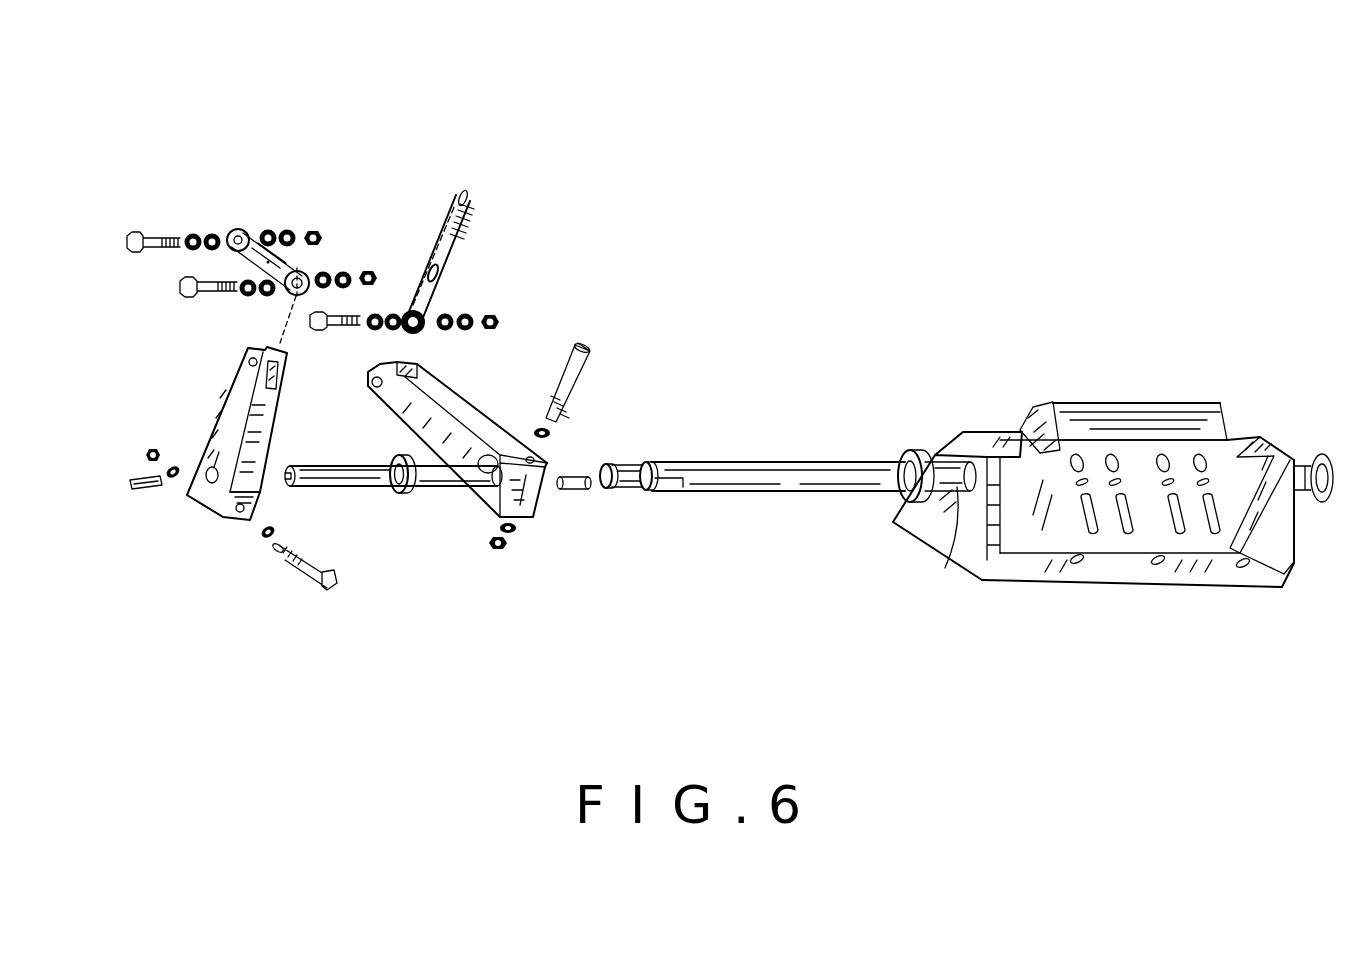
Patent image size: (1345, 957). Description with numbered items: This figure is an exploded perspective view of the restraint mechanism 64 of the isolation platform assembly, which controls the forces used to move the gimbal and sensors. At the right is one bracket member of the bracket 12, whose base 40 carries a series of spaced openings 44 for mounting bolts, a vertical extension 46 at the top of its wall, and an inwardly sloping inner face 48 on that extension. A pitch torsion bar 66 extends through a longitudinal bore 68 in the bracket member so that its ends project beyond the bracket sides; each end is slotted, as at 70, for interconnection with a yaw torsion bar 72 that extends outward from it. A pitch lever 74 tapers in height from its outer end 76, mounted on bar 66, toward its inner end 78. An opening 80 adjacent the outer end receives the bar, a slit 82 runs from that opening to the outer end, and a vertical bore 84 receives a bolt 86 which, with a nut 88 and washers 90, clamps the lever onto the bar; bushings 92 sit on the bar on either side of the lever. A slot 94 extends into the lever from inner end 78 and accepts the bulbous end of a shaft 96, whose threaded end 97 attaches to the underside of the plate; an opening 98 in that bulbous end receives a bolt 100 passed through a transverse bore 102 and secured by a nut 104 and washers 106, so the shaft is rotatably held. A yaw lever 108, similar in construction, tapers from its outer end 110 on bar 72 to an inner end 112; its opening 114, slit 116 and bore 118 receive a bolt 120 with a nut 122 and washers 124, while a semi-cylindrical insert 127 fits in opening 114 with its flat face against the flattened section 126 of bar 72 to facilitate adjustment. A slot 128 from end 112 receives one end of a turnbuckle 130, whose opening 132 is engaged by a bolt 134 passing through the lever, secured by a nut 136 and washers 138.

The bracket 12 is at (1147, 590).
The base 40 is at (1030, 585).
The openings 44 is at (1081, 566).
The vertical extension 46 is at (1228, 420).
The inner face 48 is at (1037, 407).
The restraint mechanism 64 is at (794, 322).
The pitch torsion bar 66 is at (827, 461).
The longitudinal bore 68 is at (952, 563).
The slot 70 is at (658, 488).
The yaw torsion bar 72 is at (380, 463).
The pitch lever 74 is at (478, 412).
The outer end 76 is at (492, 512).
The inner end 78 is at (374, 368).
The opening 80 is at (492, 456).
The slit 82 is at (531, 518).
The vertical bore 84 is at (533, 460).
The bolt 86 is at (578, 372).
The nut 88 is at (500, 548).
The washers 90 is at (553, 430).
The bushings 92 is at (912, 452).
The slot 94 is at (413, 376).
The shaft 96 is at (443, 232).
The threaded end 97 is at (453, 193).
The opening 98 is at (410, 310).
The bolt 100 is at (306, 320).
The transverse bore 102 is at (370, 386).
The nut 104 is at (497, 315).
The washers 106 is at (467, 312).
The yaw lever 108 is at (222, 408).
The outer end 110 is at (238, 520).
The inner end 112 is at (245, 347).
The opening 114 is at (207, 482).
The slit 116 is at (218, 516).
The bore 118 is at (241, 514).
The bolt 120 is at (307, 572).
The nut 122 is at (155, 450).
The washers 124 is at (168, 471).
The flattened section 126 is at (340, 487).
The semi-cylindrical insert 127 is at (130, 482).
The slot 128 is at (265, 378).
The turnbuckle 130 is at (291, 228).
The opening 132 is at (286, 292).
The bolt 134 is at (184, 282).
The nut 136 is at (372, 268).
The washers 138 is at (236, 232).